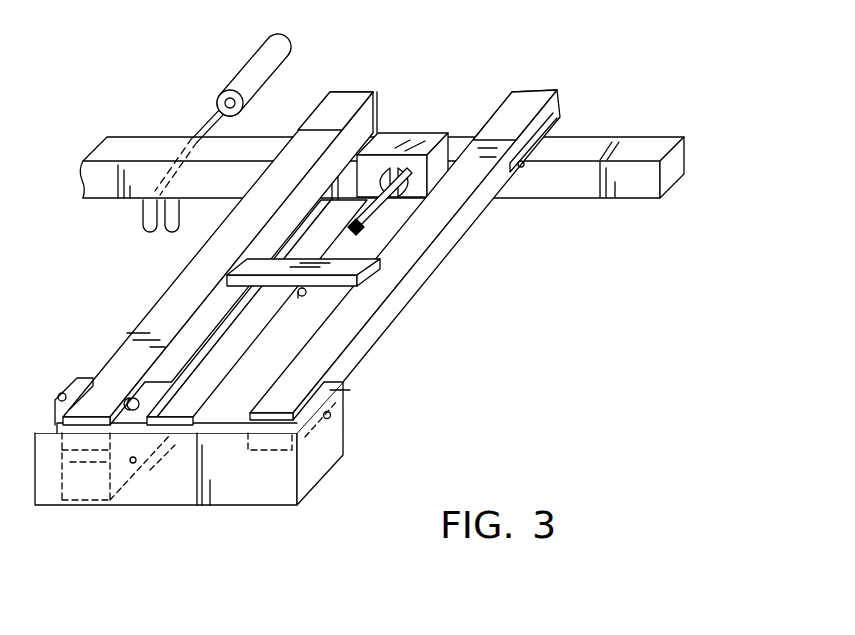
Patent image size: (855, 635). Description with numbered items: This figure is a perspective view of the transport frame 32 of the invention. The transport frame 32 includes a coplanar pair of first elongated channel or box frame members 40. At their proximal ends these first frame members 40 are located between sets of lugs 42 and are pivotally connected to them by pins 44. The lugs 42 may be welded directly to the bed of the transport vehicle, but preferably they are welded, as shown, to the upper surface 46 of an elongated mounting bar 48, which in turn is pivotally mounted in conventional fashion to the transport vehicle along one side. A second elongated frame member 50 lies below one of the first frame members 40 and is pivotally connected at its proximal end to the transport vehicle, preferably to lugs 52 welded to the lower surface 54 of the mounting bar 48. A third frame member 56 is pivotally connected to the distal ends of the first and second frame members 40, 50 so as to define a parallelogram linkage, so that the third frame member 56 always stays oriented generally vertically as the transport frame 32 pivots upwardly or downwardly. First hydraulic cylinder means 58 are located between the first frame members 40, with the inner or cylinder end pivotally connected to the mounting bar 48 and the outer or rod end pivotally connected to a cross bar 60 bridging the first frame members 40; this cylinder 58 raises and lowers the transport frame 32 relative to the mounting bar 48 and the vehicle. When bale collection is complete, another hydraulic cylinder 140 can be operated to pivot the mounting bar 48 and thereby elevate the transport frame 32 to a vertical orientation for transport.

The transport frame 32 is at (396, 291).
The first elongated frame members 40 is at (172, 281).
The lugs 42 is at (376, 93).
The pins 44 is at (523, 166).
The upper surface 46 is at (640, 143).
The mounting bar 48 is at (682, 185).
The second elongated frame member 50 is at (233, 337).
The lugs 52 is at (385, 133).
The lower surface 54 is at (107, 206).
The third frame member 56 is at (252, 487).
The first hydraulic cylinder means 58 is at (337, 263).
The cross bar 60 is at (360, 229).
The hydraulic cylinder 140 is at (238, 63).